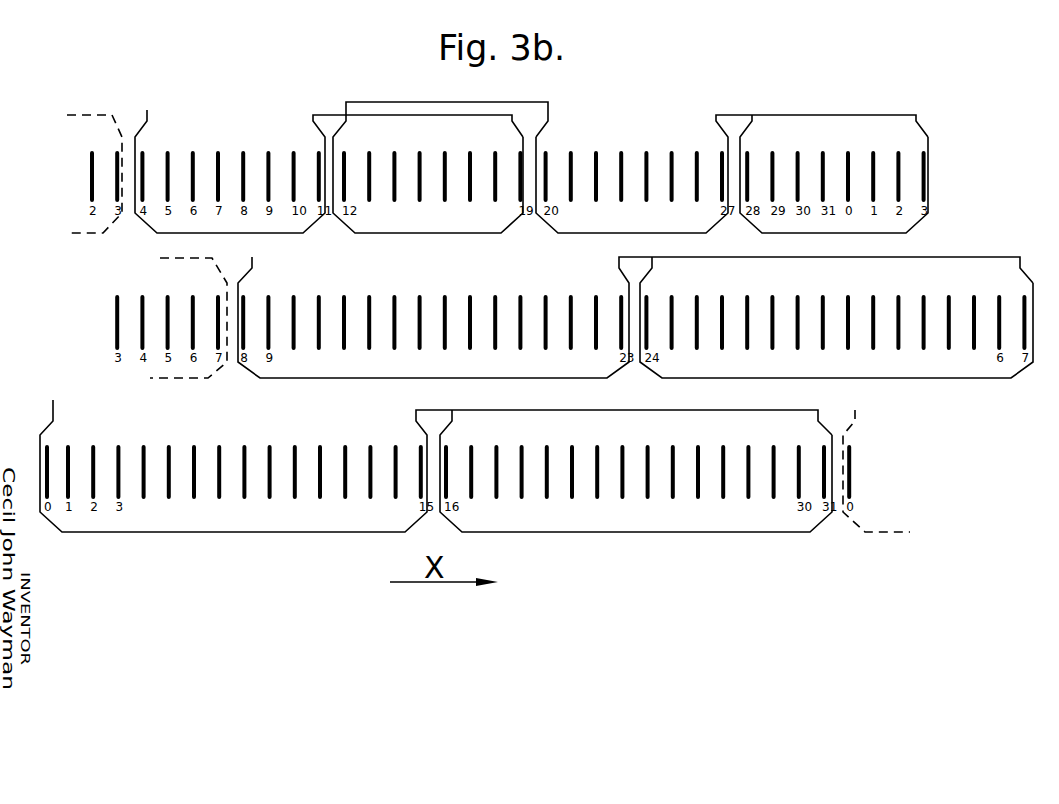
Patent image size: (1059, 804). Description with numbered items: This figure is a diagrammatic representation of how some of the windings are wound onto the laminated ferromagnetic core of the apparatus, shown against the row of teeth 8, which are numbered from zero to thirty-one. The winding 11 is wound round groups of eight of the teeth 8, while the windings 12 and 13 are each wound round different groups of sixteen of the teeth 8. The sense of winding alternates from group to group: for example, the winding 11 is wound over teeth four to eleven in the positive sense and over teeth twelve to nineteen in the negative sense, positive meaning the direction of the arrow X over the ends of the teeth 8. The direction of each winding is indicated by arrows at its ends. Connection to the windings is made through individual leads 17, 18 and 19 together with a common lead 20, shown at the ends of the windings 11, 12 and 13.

The teeth 8 is at (242, 152).
The winding 11 is at (435, 233).
The winding 12 is at (930, 378).
The winding 13 is at (698, 532).
The lead 17 is at (753, 115).
The lead 18 is at (653, 250).
The lead 19 is at (53, 421).
The common lead 20 is at (453, 410).